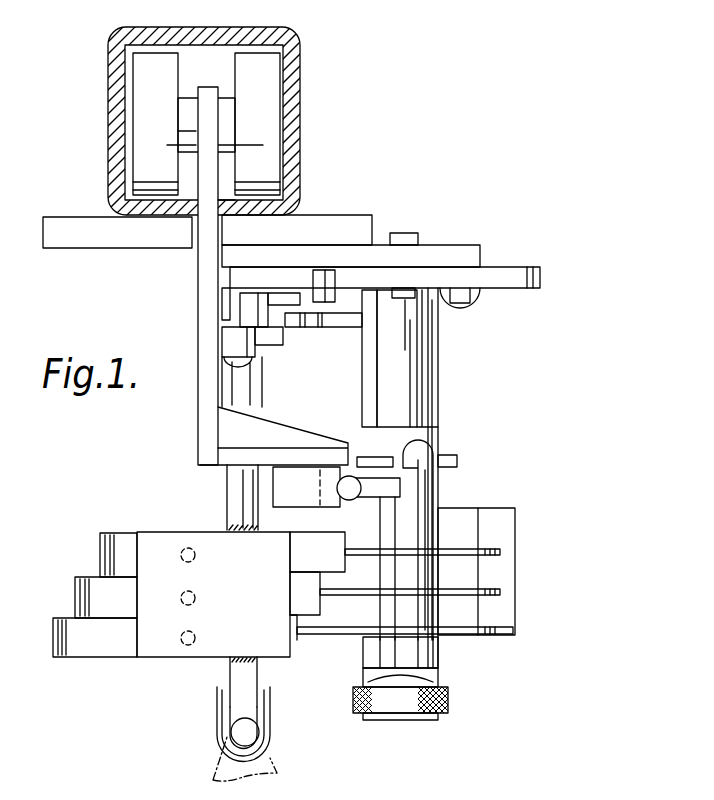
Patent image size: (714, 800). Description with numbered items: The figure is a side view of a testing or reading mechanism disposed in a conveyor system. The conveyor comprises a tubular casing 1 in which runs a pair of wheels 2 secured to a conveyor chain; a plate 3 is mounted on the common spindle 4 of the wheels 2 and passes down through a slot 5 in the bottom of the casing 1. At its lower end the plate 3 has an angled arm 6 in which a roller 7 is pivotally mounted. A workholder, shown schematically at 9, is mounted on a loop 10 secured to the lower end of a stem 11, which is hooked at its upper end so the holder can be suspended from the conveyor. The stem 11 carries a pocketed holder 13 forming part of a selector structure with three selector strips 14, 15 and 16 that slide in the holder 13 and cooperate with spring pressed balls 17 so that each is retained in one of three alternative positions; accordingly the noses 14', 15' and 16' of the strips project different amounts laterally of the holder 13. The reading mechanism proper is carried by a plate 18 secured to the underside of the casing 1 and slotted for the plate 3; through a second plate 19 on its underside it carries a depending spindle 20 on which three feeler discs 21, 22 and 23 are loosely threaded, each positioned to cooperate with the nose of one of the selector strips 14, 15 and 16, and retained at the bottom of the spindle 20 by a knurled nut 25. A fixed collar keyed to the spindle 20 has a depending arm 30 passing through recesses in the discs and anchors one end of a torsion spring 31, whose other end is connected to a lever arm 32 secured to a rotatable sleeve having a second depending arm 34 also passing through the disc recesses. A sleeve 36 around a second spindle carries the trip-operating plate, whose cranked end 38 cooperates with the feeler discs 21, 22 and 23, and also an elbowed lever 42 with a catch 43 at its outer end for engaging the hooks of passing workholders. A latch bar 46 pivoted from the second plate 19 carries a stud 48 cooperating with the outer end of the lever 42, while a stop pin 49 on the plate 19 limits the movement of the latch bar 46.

The tubular casing 1 is at (297, 113).
The wheels 2 is at (143, 103).
The plate 3 is at (198, 272).
The common spindle 4 is at (185, 132).
The slot 5 is at (230, 208).
The angled arm 6 is at (290, 443).
The roller 7 is at (306, 487).
The workholder 9 is at (272, 762).
The loop 10 is at (216, 720).
The stem 11 is at (234, 674).
The pocketed holder 13 is at (150, 650).
The selector strip 14 is at (95, 657).
The selector strip 15 is at (85, 597).
The selector strip 16 is at (100, 555).
The spring pressed balls 17 is at (183, 652).
The plate 18 is at (347, 223).
The second plate 19 is at (450, 243).
The depending spindle 20 is at (398, 367).
The disc 21 is at (460, 636).
The disc 22 is at (452, 596).
The disc 23 is at (463, 556).
The knurled nut 25 is at (450, 704).
The depending arm 30 is at (435, 487).
The torsion spring 31 is at (457, 458).
The lever arm 32 is at (370, 478).
The depending arm 34 is at (390, 523).
The sleeve 36 is at (440, 388).
The cranked end 38 is at (500, 520).
The lever 42 is at (303, 320).
The catch 43 is at (233, 340).
The latch bar 46 is at (514, 278).
The stud 48 is at (243, 312).
The stop pin 49 is at (340, 282).
The nose 14' is at (318, 645).
The nose 15' is at (326, 600).
The nose 16' is at (319, 540).